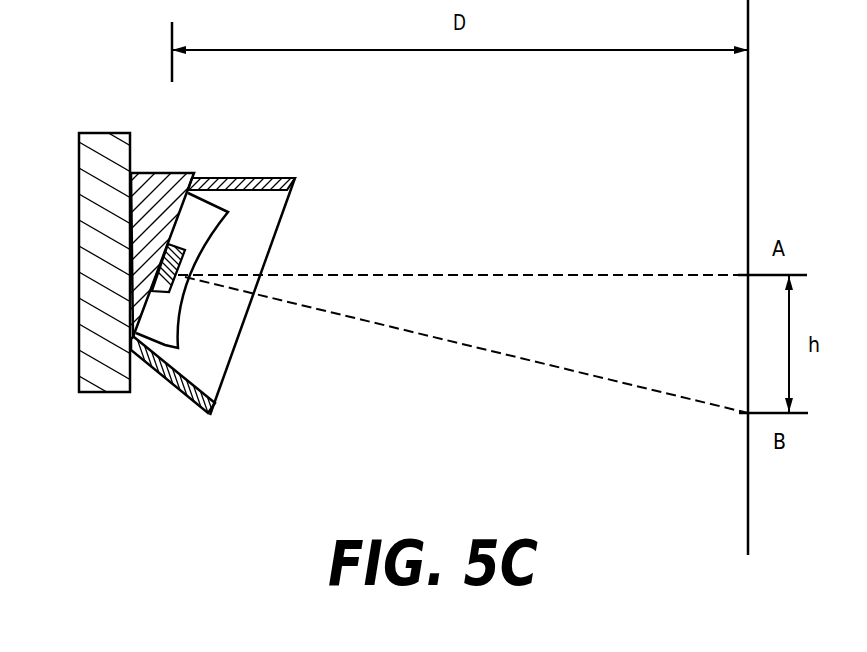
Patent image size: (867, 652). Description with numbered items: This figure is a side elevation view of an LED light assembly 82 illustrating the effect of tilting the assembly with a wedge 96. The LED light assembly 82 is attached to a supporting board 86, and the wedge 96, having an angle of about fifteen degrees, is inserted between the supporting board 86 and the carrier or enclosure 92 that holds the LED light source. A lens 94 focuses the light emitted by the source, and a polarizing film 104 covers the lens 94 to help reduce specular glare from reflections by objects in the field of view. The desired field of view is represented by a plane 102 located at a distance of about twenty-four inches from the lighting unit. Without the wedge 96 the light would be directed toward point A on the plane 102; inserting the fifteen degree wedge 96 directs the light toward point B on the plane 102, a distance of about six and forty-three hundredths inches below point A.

The LED light assembly 82 is at (112, 78).
The supporting board 86 is at (90, 388).
The wedge 96 is at (140, 172).
The carrier or enclosure 92 is at (217, 186).
The polarizing film 104 is at (276, 233).
The lens 94 is at (167, 347).
The plane 102 is at (750, 1).